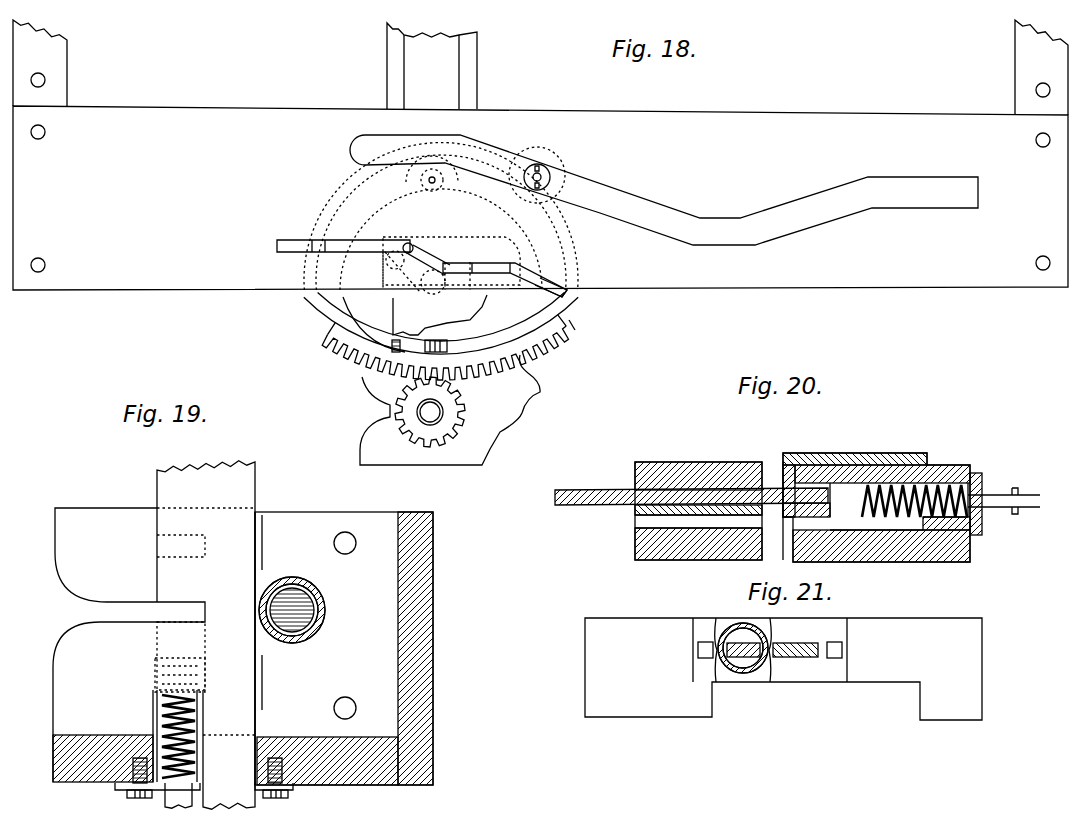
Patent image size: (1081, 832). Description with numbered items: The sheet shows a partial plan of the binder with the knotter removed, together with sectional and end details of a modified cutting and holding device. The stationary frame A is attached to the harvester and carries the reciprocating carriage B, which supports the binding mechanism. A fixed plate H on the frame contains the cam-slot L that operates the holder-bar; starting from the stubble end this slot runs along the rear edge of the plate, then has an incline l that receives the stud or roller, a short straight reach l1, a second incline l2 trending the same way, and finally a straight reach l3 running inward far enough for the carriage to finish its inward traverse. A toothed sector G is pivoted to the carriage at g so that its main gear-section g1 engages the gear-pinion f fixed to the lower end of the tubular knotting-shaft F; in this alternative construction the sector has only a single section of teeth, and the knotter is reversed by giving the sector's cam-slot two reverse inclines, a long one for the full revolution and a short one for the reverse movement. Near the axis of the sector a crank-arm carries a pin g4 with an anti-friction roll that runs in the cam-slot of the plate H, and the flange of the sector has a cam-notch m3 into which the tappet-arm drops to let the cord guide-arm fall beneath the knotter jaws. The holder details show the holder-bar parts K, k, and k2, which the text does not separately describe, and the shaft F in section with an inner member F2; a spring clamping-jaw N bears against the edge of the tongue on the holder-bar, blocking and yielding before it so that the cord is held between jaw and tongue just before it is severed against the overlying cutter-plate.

In FIG. 18, the stationary frame A is at (540, 155).
In FIG. 18, the carriage B is at (450, 244).
In FIG. 18, the fixed plate H is at (664, 190).
In FIG. 18, the cam-slot L is at (435, 247).
In FIG. 18, the straight reach l3 is at (290, 258).
In FIG. 18, the second incline l2 is at (428, 260).
In FIG. 18, the short straight reach l1 is at (485, 268).
In FIG. 18, the incline l is at (548, 282).
In FIG. 18, the sector pivot g is at (435, 180).
In FIG. 18, the pin g4 is at (550, 180).
In FIG. 18, the toothed sector G is at (441, 336).
In FIG. 18, the main gear-section g1 is at (568, 333).
In FIG. 18, the cam-notch m3 is at (418, 347).
In FIG. 18, the gear-pinion f is at (450, 422).
In FIG. 19, the rod K is at (217, 635).
In FIG. 20, the rod K is at (691, 491).
In FIG. 19, the shoulder k is at (181, 578).
In FIG. 19, the socket k2 is at (181, 656).
In FIG. 19, the spring clamping-jaw N is at (206, 683).
In FIG. 20, the spring clamping-jaw N is at (858, 520).
In FIG. 21, the spring clamping-jaw N is at (745, 660).
In FIG. 19, the tubular shaft F is at (325, 618).
In FIG. 19, the shaft F2 is at (289, 630).